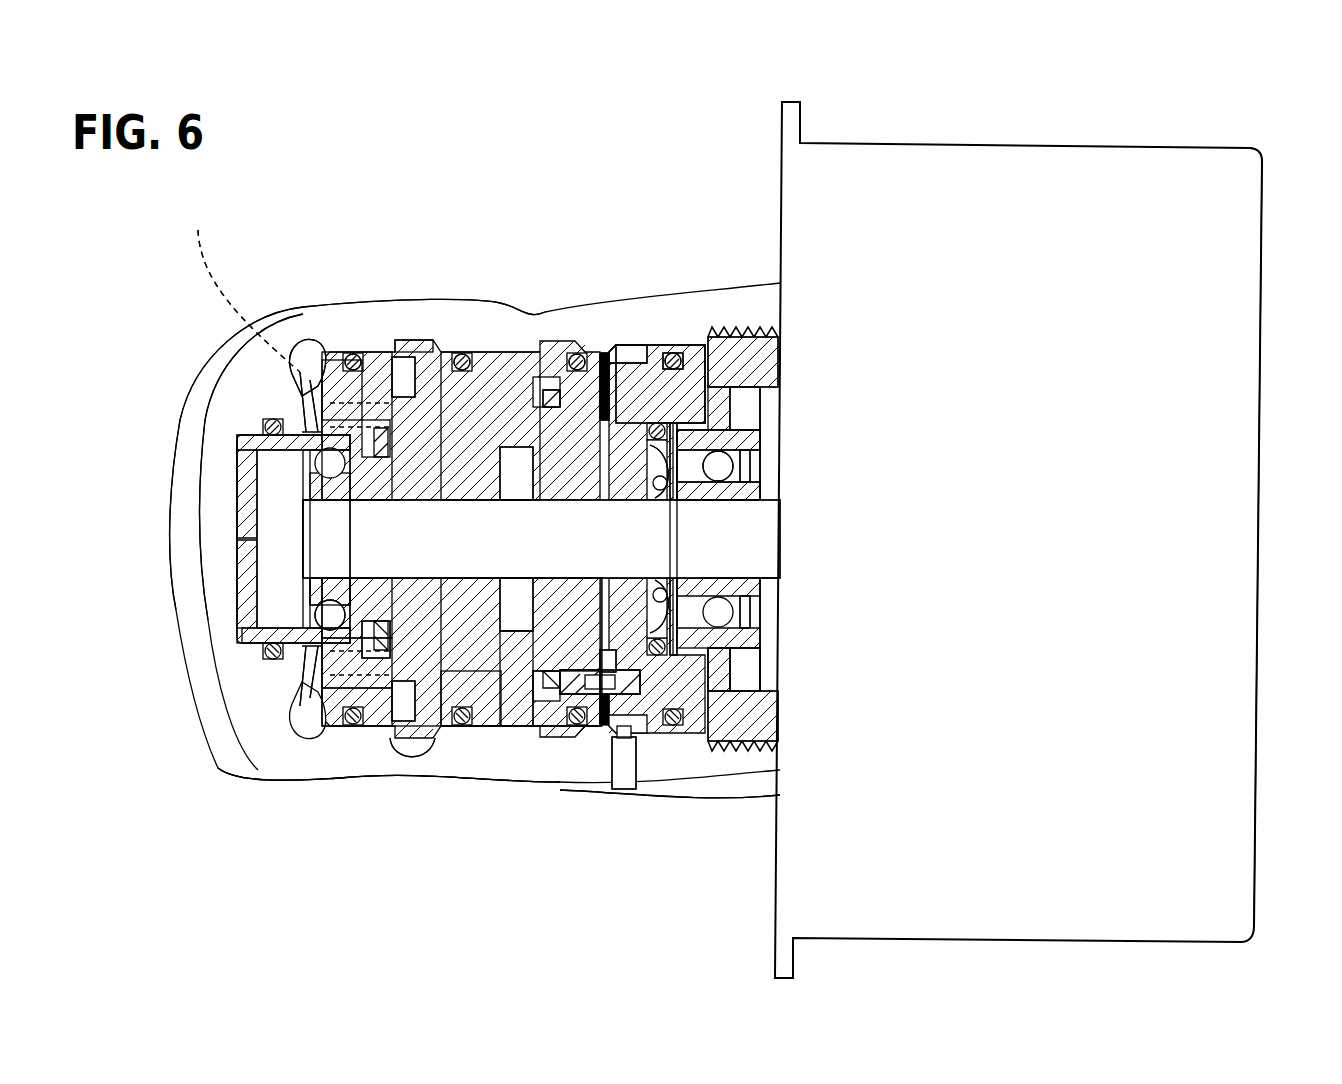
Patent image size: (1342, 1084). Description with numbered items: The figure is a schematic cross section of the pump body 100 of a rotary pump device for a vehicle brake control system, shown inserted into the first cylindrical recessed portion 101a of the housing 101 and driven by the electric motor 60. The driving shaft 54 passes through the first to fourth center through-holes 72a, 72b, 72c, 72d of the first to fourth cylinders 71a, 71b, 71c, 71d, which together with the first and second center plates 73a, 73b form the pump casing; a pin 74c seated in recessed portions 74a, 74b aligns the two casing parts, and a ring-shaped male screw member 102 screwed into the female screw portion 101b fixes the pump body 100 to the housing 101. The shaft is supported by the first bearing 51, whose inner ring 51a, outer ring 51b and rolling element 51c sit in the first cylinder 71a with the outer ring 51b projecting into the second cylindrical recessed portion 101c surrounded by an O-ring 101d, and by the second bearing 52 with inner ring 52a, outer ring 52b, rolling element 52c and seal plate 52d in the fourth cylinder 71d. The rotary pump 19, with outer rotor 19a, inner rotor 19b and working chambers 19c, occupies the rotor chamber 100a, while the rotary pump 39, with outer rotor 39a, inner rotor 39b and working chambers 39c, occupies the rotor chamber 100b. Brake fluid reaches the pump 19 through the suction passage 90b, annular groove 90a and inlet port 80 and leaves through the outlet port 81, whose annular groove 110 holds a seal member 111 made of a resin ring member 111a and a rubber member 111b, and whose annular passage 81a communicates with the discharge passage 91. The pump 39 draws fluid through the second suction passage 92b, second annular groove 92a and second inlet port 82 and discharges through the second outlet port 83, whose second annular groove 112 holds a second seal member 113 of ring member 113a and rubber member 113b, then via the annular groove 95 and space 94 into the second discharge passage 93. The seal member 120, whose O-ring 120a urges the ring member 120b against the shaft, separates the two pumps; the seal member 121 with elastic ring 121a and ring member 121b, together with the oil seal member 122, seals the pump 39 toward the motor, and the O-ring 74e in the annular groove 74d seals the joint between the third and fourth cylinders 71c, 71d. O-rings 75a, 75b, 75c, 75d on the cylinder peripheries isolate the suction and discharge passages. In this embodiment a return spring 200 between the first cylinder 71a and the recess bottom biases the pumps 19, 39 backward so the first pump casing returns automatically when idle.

The electric motor 60 is at (1284, 323).
The pump body 100 is at (300, 345).
The housing 101 is at (270, 350).
The first cylindrical recessed portion 101a is at (280, 352).
The female screw portion 101b is at (700, 777).
The second cylindrical recessed portion 101c is at (280, 452).
The O-ring 101d is at (270, 412).
The seal member 120 is at (110, 440).
The O-ring 120a is at (255, 445).
The ring member 120b is at (260, 520).
The driving shaft 54 is at (320, 502).
The first center through-hole 72a is at (320, 546).
The second center through-hole 72b is at (320, 522).
The third center through-hole 72c is at (740, 578).
The fourth center through-hole 72d is at (760, 650).
The first bearing 51 is at (120, 583).
The inner ring 51a is at (305, 606).
The outer ring 51b is at (305, 630).
The rolling element 51c is at (318, 614).
The return spring 200 is at (290, 655).
The rotary pump 19 is at (165, 697).
The outer rotor 19a is at (310, 728).
The inner rotor 19b is at (305, 685).
The working chamber 19c is at (305, 708).
The annular groove 110 is at (380, 752).
The seal member 111 is at (388, 826).
The ring member 111a is at (382, 748).
The rubber member 111b is at (322, 760).
The annular groove 90a is at (420, 764).
The suction passage 90b is at (430, 762).
The inlet port 80 is at (455, 735).
The second outlet port 83 is at (545, 705).
The second annular groove 112 is at (555, 722).
The recessed portion 74a is at (569, 750).
The rotary pump 39 is at (588, 948).
The outer rotor 39a is at (532, 750).
The inner rotor 39b is at (482, 745).
The working chamber 39c is at (505, 745).
The annular groove 95 is at (606, 700).
The space 94 is at (600, 705).
The second seal member 113 is at (700, 816).
The ring member 113a is at (618, 805).
The rubber member 113b is at (622, 792).
The second discharge passage 93 is at (640, 786).
The male screw member 102 is at (760, 736).
The recessed portion 74b is at (770, 718).
The pin 74c is at (760, 687).
The annular groove 74d is at (745, 406).
The O-ring 74e is at (768, 398).
The oil seal member 122 is at (760, 627).
The second bearing 52 is at (920, 410).
The inner ring 52a is at (750, 495).
The outer ring 52b is at (752, 455).
The rolling element 52c is at (722, 468).
The seal plate 52d is at (752, 440).
The first cylinder 71a is at (338, 385).
The second cylinder 71b is at (395, 352).
The third cylinder 71c is at (618, 350).
The fourth cylinder 71d is at (735, 345).
The O-ring 75a is at (343, 356).
The O-ring 75b is at (456, 352).
The O-ring 75c is at (578, 353).
The O-ring 75d is at (684, 350).
The first center plate 73a is at (358, 415).
The second center plate 73b is at (528, 380).
The second inlet port 82 is at (488, 385).
The second annular groove 92a is at (602, 380).
The second suction passage 92b is at (552, 385).
The rotor chamber 100a is at (412, 340).
The rotor chamber 100b is at (525, 318).
The seal member 121 is at (776, 138).
The elastic ring 121a is at (645, 345).
The ring member 121b is at (690, 345).
The discharge passage 91 is at (300, 348).
The outlet port 81 is at (242, 285).
The annular passage 81a is at (290, 372).